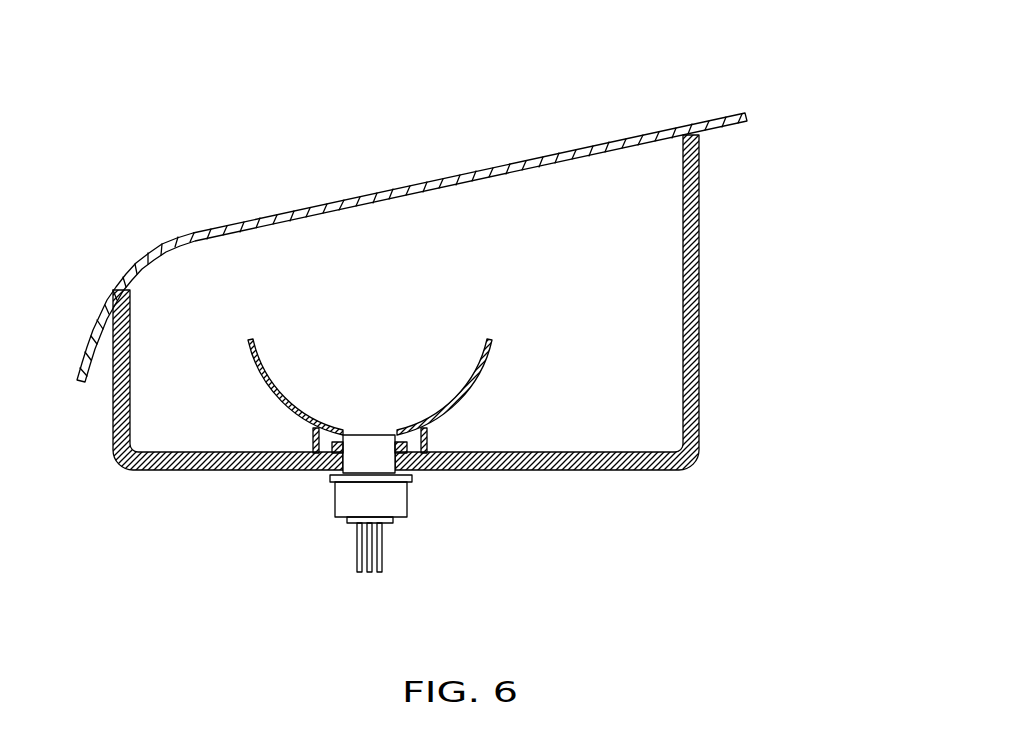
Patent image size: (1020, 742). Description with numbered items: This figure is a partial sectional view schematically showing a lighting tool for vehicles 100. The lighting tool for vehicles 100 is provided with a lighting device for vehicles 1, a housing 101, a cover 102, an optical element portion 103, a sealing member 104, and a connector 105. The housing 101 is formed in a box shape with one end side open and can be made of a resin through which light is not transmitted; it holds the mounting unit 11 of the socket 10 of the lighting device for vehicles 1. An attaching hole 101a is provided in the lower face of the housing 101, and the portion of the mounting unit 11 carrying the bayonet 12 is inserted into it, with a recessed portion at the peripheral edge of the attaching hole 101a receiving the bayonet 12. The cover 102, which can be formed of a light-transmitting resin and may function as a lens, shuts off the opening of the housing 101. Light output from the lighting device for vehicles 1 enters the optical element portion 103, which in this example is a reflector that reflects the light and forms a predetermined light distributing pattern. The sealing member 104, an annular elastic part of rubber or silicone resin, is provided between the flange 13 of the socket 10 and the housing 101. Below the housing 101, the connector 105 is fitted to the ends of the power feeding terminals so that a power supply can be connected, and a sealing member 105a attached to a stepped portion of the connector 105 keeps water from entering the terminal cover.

The lighting tool for vehicles 100 is at (770, 110).
The housing 101 is at (693, 352).
The attaching hole 101a is at (393, 463).
The cover 102 is at (287, 213).
The optical element portion 103 is at (270, 388).
The sealing member 104 is at (330, 473).
The connector 105 is at (469, 555).
The sealing member 105a is at (395, 522).
The lighting device for vehicles 1 is at (412, 477).
The socket 10 is at (412, 468).
The mounting unit 11 is at (373, 433).
The bayonet 12 is at (348, 445).
The flange 13 is at (342, 480).